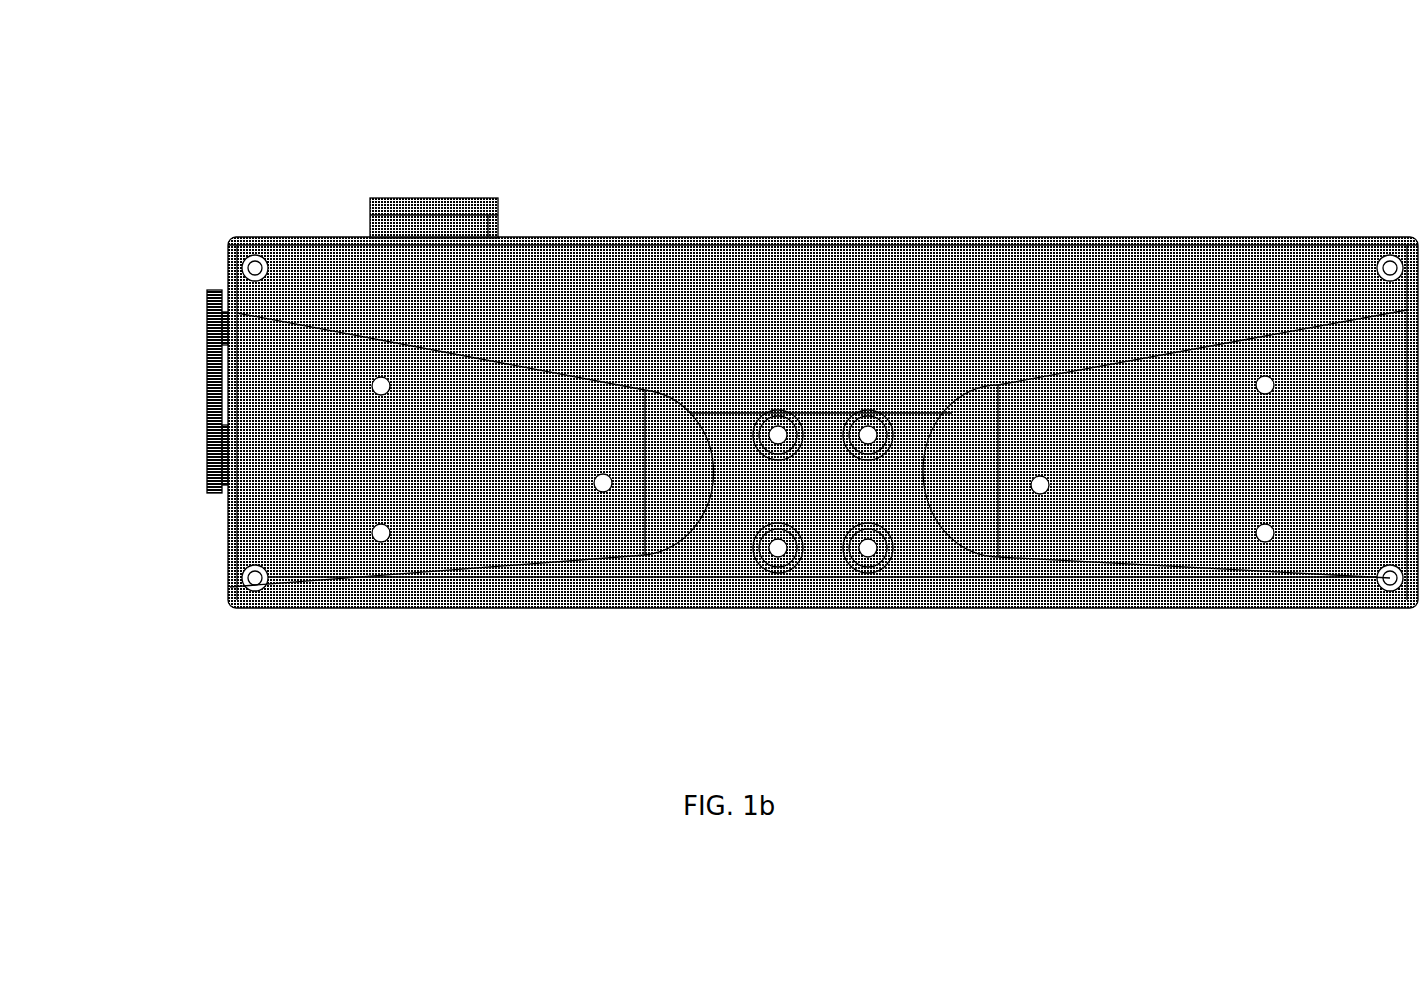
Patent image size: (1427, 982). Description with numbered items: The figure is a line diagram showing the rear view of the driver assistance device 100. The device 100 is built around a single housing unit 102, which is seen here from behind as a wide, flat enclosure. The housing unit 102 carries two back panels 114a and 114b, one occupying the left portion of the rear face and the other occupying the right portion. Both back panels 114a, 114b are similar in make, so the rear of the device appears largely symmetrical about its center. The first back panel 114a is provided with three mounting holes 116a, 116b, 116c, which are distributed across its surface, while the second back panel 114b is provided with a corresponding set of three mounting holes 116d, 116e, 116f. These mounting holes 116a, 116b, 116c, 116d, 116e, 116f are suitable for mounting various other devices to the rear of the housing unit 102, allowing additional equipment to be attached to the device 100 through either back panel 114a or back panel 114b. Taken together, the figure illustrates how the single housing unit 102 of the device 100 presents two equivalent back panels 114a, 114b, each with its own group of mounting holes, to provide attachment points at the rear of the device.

The device 100 is at (218, 108).
The single housing unit 102 is at (228, 240).
The back panel 114a is at (300, 609).
The back panel 114b is at (1158, 609).
The mounting hole 116a is at (391, 393).
The mounting hole 116b is at (392, 539).
The mounting hole 116c is at (594, 485).
The mounting hole 116d is at (1274, 392).
The mounting hole 116e is at (1274, 539).
The mounting hole 116f is at (1050, 487).